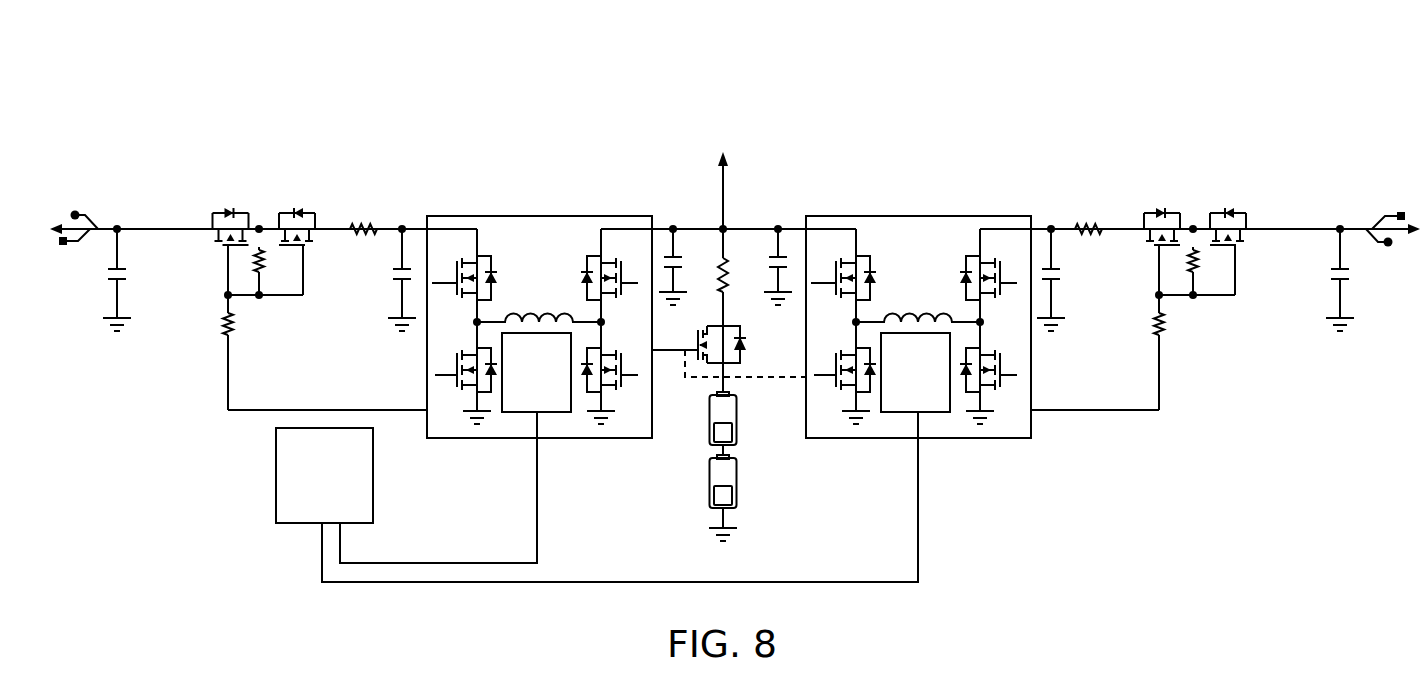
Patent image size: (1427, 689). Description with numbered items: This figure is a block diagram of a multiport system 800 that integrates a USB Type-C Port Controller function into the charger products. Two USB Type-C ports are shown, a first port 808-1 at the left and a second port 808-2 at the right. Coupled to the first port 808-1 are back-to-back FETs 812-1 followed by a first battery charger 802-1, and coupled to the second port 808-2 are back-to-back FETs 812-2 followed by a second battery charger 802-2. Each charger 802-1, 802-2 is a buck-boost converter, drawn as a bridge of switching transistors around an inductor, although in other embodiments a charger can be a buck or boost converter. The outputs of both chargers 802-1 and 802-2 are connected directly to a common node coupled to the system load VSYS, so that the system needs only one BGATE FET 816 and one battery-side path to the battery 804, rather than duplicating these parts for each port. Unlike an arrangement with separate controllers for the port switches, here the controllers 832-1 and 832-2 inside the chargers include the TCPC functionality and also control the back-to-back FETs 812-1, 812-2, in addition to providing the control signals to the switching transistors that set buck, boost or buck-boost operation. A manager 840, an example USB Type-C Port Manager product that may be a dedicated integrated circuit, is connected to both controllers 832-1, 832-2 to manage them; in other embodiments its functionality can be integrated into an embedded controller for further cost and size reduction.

The multiport system 800 is at (1222, 78).
The first port 808-1 is at (130, 157).
The second port 808-2 is at (1336, 155).
The first back-to-back FETs 812-1 is at (283, 199).
The second back-to-back FETs 812-2 is at (1166, 200).
The first battery charger 802-1 is at (530, 216).
The second battery charger 802-2 is at (935, 216).
The first controller 832-1 is at (525, 412).
The second controller 832-2 is at (902, 412).
The manager 840 is at (276, 470).
The BGATE FET 816 is at (742, 352).
The battery 804 is at (702, 456).